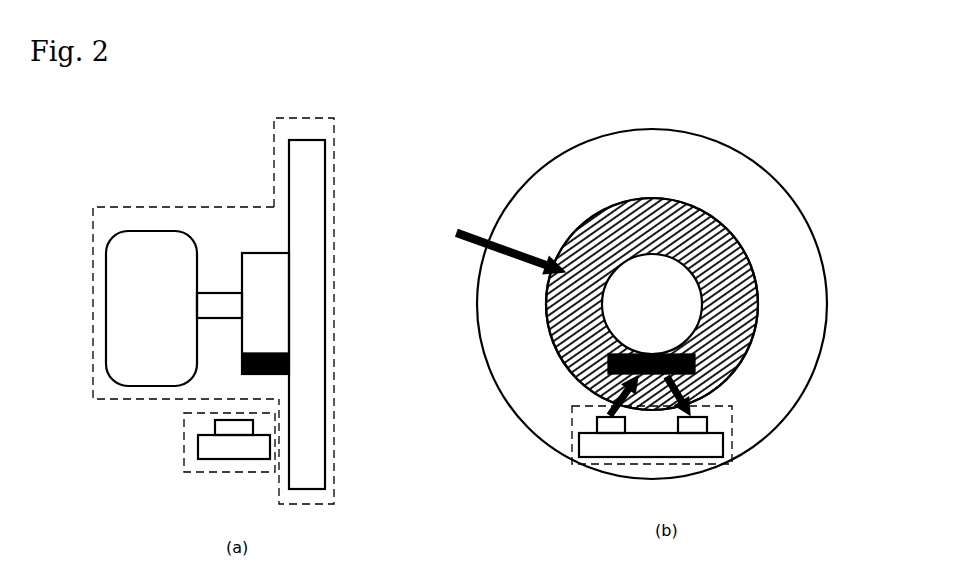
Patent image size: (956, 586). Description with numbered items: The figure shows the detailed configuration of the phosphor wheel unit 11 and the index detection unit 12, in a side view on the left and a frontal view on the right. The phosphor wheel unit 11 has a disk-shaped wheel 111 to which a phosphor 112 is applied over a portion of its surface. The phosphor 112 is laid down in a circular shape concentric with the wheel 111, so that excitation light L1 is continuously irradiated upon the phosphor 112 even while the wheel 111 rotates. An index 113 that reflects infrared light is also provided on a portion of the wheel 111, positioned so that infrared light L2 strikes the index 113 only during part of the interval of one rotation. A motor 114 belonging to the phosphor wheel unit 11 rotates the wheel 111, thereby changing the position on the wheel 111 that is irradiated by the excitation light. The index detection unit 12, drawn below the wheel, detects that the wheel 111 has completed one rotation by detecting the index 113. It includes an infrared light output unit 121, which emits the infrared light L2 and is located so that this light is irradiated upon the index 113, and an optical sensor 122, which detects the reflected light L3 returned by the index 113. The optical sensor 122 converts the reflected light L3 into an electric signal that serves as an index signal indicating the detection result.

The phosphor wheel unit 11 is at (309, 117).
The wheel 111 is at (547, 200).
The phosphor 112 is at (647, 213).
The index 113 is at (608, 363).
The motor 114 is at (137, 255).
The index detection unit 12 is at (183, 435).
The infrared light output unit 121 is at (612, 422).
The optical sensor 122 is at (693, 425).
The excitation light L1 is at (456, 229).
The infrared light L2 is at (613, 402).
The reflected light L3 is at (710, 390).